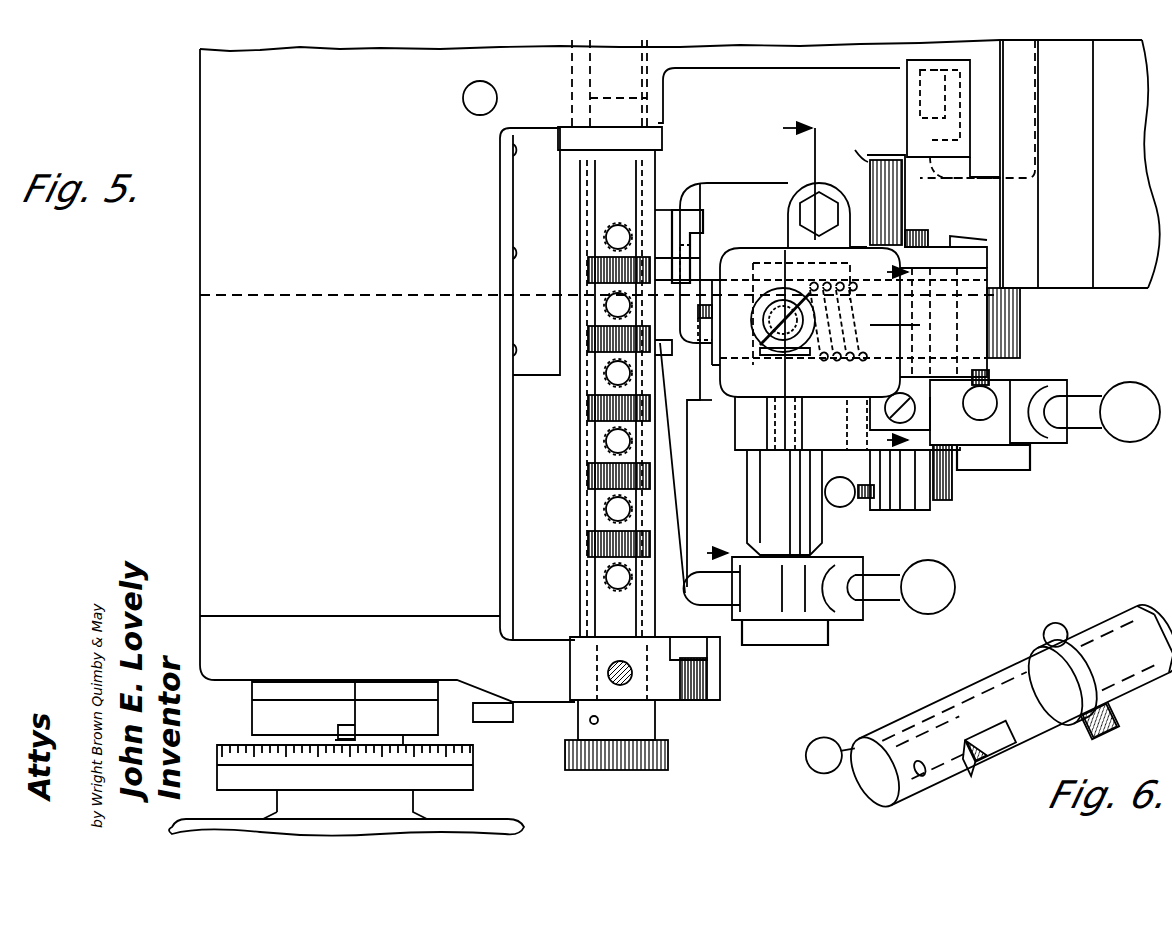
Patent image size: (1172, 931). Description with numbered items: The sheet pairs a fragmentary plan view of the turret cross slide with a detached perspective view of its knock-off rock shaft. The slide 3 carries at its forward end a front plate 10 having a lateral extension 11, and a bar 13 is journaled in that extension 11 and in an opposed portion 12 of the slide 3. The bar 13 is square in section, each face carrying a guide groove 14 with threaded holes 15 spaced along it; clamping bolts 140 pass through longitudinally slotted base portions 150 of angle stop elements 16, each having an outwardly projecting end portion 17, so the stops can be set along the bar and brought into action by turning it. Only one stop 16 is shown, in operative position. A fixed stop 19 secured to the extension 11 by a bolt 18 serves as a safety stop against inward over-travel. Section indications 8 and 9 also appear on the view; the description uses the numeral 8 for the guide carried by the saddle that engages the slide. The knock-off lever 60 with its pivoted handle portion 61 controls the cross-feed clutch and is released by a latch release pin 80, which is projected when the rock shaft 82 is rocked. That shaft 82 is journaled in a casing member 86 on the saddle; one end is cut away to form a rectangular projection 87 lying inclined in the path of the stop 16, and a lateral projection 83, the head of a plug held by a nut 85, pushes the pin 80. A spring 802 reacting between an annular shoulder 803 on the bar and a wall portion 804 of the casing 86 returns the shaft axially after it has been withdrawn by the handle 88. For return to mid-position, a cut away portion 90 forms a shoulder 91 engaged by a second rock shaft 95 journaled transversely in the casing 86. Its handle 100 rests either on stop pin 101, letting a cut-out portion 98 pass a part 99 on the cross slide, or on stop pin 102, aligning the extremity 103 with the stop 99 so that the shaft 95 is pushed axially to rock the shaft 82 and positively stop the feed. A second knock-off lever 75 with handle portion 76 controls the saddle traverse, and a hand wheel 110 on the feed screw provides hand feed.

In FIG. 5, the slide 3 is at (218, 266).
In FIG. 5, the front plate 10 is at (387, 680).
In FIG. 5, the hand wheel 110 is at (490, 822).
In FIG. 5, the lateral extension 11 is at (639, 703).
In FIG. 5, the portion of the slide 12 is at (665, 86).
In FIG. 5, the bar 13 is at (645, 168).
In FIG. 5, the guide groove 14 is at (615, 603).
In FIG. 5, the threaded holes 15 is at (618, 573).
In FIG. 5, the angle stop elements 16 is at (665, 217).
In FIG. 5, the end portion 17 is at (690, 215).
In FIG. 5, the bolt 18 is at (708, 690).
In FIG. 5, the fixed stop 19 is at (706, 655).
In FIG. 5, the clamping bolts 140 is at (681, 267).
In FIG. 5, the slotted base portions 150 is at (683, 347).
In FIG. 5, the guide 8 is at (752, 333).
In FIG. 5, the section line 9 is at (846, 350).
In FIG. 5, the part carried by the cross slide 99 is at (912, 138).
In FIG. 5, the cut-out portion 98 is at (912, 224).
In FIG. 5, the extremity 103 is at (868, 155).
In FIG. 5, the spring 802 is at (831, 195).
In FIG. 5, the annular shoulder 803 is at (785, 300).
In FIG. 6, the annular shoulder 803 is at (1049, 668).
In FIG. 5, the wall portion 804 is at (870, 305).
In FIG. 5, the casing member 86 is at (737, 382).
In FIG. 5, the rectangular projection 87 is at (700, 417).
In FIG. 6, the rectangular projection 87 is at (1134, 666).
In FIG. 5, the rock shaft 82 is at (1020, 335).
In FIG. 6, the rock shaft 82 is at (1006, 751).
In FIG. 5, the knock-off lever 75 is at (1017, 392).
In FIG. 5, the handle portion 76 is at (1088, 402).
In FIG. 5, the handle 88 is at (995, 418).
In FIG. 6, the handle 88 is at (851, 728).
In FIG. 5, the stop pin 102 is at (955, 485).
In FIG. 5, the second rock shaft 95 is at (910, 502).
In FIG. 5, the stop pin 101 is at (860, 447).
In FIG. 5, the handle 100 is at (863, 505).
In FIG. 5, the release pin 80 is at (762, 480).
In FIG. 5, the handle portion 61 is at (885, 593).
In FIG. 5, the knock-off lever 60 is at (770, 593).
In FIG. 6, the nut 85 is at (1065, 605).
In FIG. 6, the cut away portion 90 is at (997, 759).
In FIG. 6, the shoulder 91 is at (951, 780).
In FIG. 6, the lateral projection 83 is at (1126, 727).